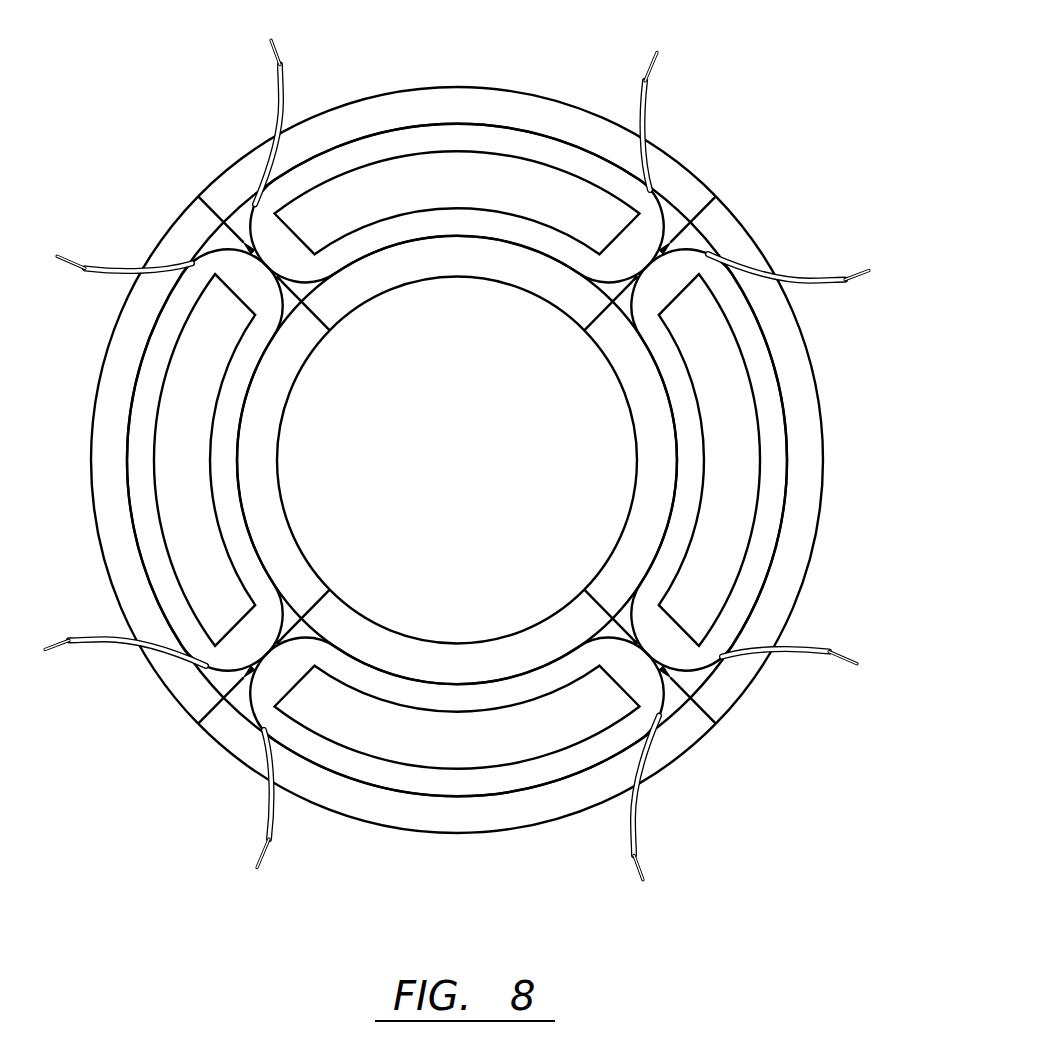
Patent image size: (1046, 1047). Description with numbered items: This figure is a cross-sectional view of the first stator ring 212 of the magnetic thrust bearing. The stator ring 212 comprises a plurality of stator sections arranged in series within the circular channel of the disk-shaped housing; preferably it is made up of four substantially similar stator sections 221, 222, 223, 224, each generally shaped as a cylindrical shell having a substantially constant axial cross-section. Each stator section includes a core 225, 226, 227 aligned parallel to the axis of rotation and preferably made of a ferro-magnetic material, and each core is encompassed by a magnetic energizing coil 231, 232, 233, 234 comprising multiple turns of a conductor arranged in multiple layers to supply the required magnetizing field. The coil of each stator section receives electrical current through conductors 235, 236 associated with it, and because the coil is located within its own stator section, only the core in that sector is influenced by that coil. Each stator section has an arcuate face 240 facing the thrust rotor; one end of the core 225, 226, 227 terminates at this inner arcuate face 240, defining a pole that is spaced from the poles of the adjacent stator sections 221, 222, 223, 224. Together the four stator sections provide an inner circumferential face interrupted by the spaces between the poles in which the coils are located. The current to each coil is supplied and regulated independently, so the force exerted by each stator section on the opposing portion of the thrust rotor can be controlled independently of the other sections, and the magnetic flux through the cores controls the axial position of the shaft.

The stator ring 212 is at (613, 108).
The stator section 221 is at (418, 90).
The stator section 222 is at (830, 435).
The stator section 223 is at (594, 812).
The stator section 224 is at (112, 337).
The core 225 is at (413, 127).
The core 226 is at (418, 198).
The core 227 is at (417, 271).
The magnetic energizing coil 231 is at (443, 140).
The magnetic energizing coil 232 is at (667, 277).
The magnetic energizing coil 233 is at (430, 787).
The magnetic energizing coil 234 is at (251, 643).
The conductor 235 is at (282, 112).
The conductor 236 is at (655, 120).
The arcuate face 240 is at (525, 131).